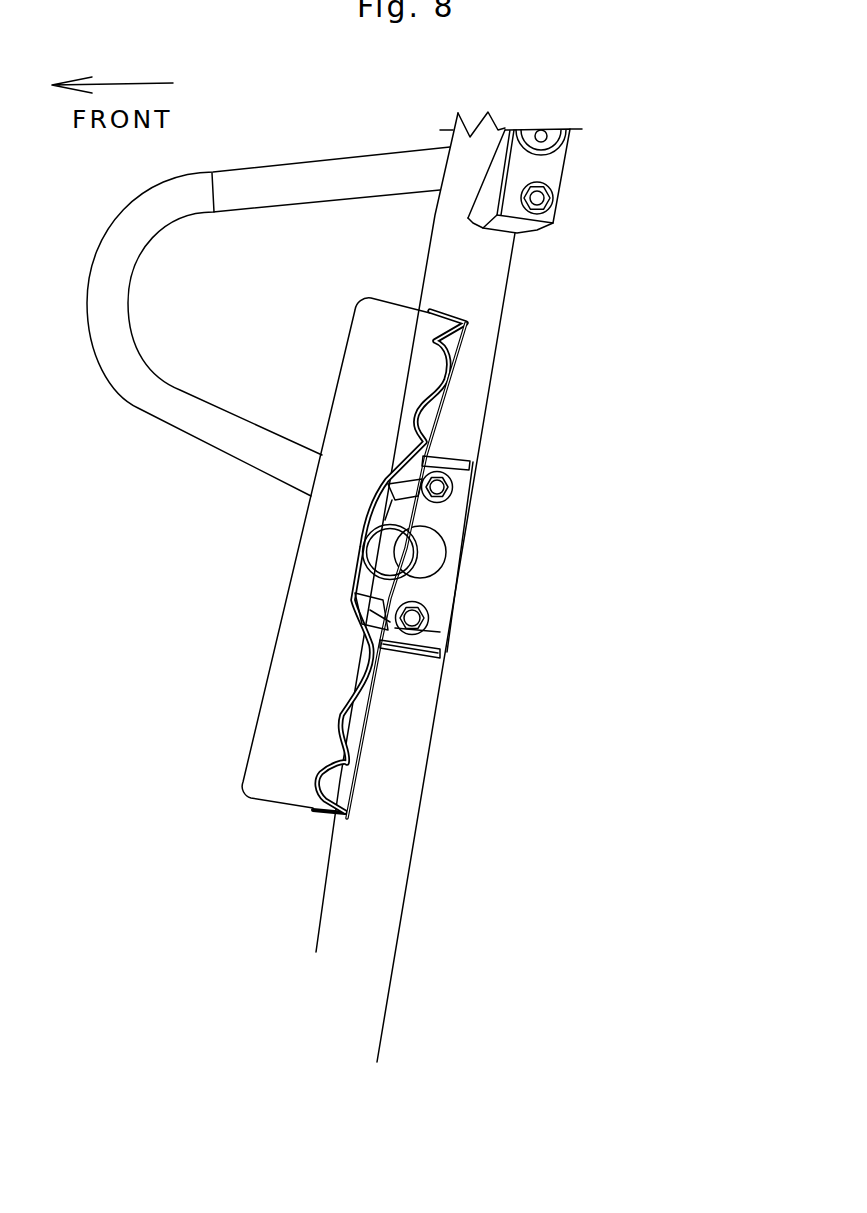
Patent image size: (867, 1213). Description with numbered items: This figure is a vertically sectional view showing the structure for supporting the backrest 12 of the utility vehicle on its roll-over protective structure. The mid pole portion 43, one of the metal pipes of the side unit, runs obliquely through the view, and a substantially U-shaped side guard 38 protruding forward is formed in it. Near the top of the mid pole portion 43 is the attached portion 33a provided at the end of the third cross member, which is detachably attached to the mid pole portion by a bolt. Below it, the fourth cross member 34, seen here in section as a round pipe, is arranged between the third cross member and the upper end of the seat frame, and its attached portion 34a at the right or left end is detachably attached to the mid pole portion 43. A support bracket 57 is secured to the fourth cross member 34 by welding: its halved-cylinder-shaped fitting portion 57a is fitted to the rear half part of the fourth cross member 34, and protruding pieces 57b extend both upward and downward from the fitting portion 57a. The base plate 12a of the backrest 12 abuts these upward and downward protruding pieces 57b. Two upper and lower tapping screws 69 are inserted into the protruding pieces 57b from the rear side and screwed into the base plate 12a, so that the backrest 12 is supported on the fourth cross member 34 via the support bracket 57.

The backrest 12 is at (260, 720).
The base plate 12a is at (353, 770).
The attached portion 33a is at (557, 208).
The fourth cross member 34 is at (382, 558).
The attached portion 34a is at (430, 627).
The side guard 38 is at (152, 408).
The mid pole portion 43 is at (353, 980).
The support bracket 57 is at (440, 558).
The fitting portion 57a is at (430, 588).
The protruding piece 57b is at (390, 482).
The tapping screw 69 is at (453, 489).